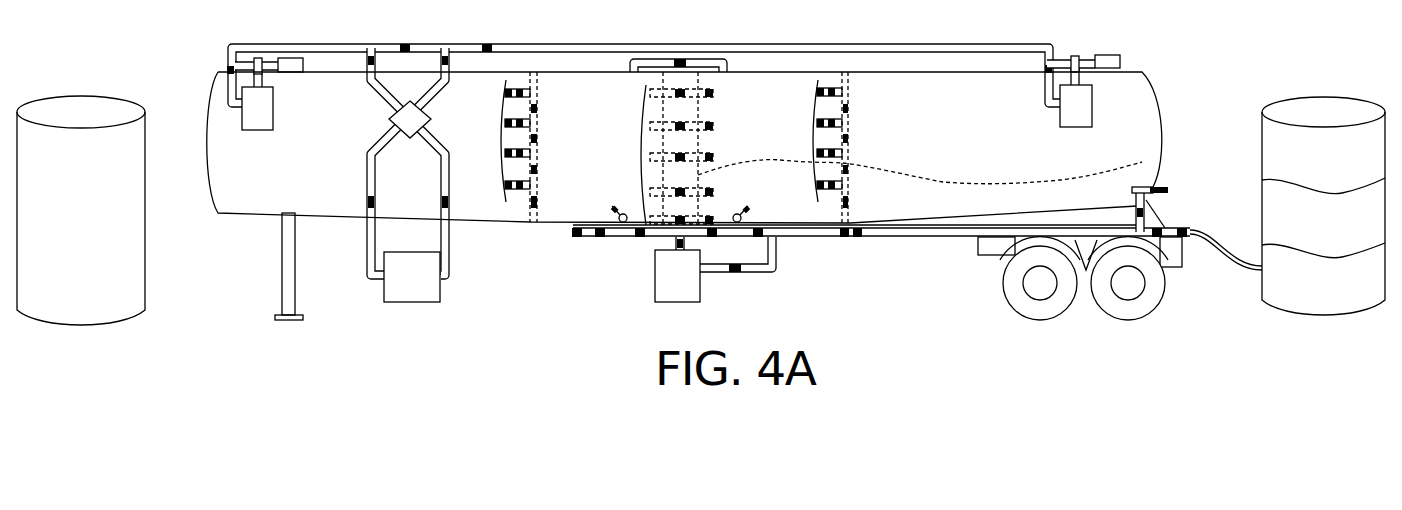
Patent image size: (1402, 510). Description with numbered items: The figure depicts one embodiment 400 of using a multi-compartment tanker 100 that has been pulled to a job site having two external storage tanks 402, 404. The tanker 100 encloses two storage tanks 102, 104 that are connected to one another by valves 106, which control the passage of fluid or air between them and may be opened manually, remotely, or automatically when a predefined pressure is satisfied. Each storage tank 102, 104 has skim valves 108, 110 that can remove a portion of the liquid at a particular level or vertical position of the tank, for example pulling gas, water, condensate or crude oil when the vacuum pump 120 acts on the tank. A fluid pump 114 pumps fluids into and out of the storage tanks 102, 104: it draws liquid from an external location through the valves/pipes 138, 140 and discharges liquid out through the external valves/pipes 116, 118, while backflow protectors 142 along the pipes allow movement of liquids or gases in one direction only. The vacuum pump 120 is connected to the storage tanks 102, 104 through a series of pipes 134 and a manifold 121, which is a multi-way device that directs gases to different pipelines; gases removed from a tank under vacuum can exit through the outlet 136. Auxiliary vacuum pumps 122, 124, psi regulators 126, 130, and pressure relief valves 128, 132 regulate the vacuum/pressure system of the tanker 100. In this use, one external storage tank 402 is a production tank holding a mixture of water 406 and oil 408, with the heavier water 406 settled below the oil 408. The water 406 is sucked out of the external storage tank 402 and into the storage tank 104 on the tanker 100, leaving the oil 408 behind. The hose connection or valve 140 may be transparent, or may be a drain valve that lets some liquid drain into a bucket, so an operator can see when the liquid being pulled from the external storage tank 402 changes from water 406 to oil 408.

The tanker 100 is at (1158, 68).
The storage tank 102 is at (273, 142).
The storage tank 104 is at (1000, 114).
The valve 106 is at (643, 155).
The skim valve 108 is at (503, 138).
The skim valve 110 is at (812, 141).
The fluid pump 114 is at (713, 269).
The external valve/pipe 116 is at (615, 207).
The external valve/pipe 118 is at (747, 207).
The vacuum pump 120 is at (408, 175).
The manifold 121 is at (410, 119).
The auxiliary vacuum pump 122 is at (257, 108).
The auxiliary vacuum pump 124 is at (1076, 106).
The psi regulator 126 is at (259, 58).
The pressure relief valve 128 is at (296, 72).
The psi regulator 130 is at (1077, 56).
The pressure relief valve 132 is at (1110, 68).
The pipes 134 is at (537, 40).
The outlet 136 is at (728, 60).
The valve/pipe 138 is at (1168, 190).
The hose connection or valve 140 is at (1186, 231).
The backflow protector 142 is at (603, 237).
The embodiment of using a multi-compartment tanker 400 is at (135, 36).
The external storage tank 402 is at (1323, 206).
The external storage tank 404 is at (81, 210).
The water 406 is at (1041, 233).
The oil 408 is at (1323, 206).